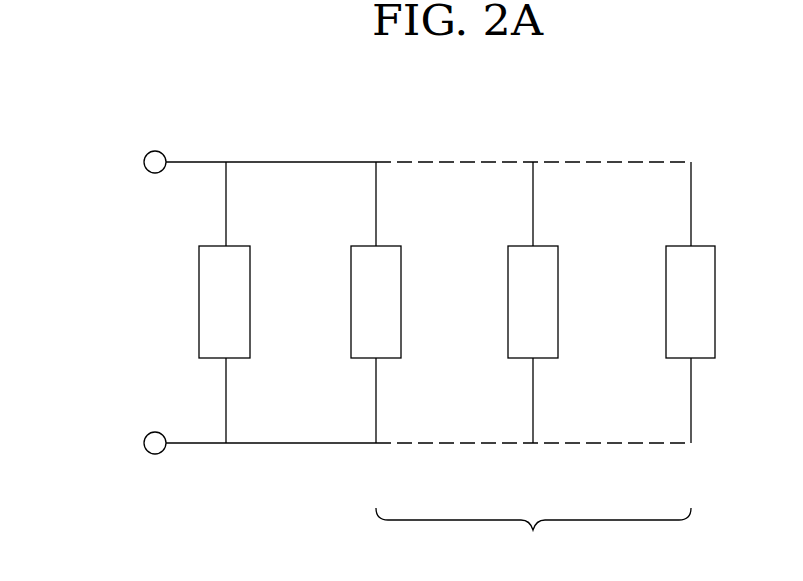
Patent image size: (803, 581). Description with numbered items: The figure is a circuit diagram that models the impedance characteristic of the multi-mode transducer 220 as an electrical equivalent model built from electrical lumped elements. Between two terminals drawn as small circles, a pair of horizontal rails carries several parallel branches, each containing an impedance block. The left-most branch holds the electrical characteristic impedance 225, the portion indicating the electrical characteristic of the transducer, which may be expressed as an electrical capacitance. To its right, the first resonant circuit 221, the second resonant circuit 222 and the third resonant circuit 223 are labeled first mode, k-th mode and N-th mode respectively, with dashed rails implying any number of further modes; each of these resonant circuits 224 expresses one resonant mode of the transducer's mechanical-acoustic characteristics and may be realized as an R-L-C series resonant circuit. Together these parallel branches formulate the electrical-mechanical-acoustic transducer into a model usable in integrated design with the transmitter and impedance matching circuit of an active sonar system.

The multi-mode transducer 220 is at (282, 150).
The first resonant circuit 221 is at (351, 300).
The second resonant circuit 222 is at (508, 300).
The third resonant circuit 223 is at (666, 300).
The resonant circuits 224 is at (527, 507).
The electrical characteristic impedance 225 is at (199, 300).